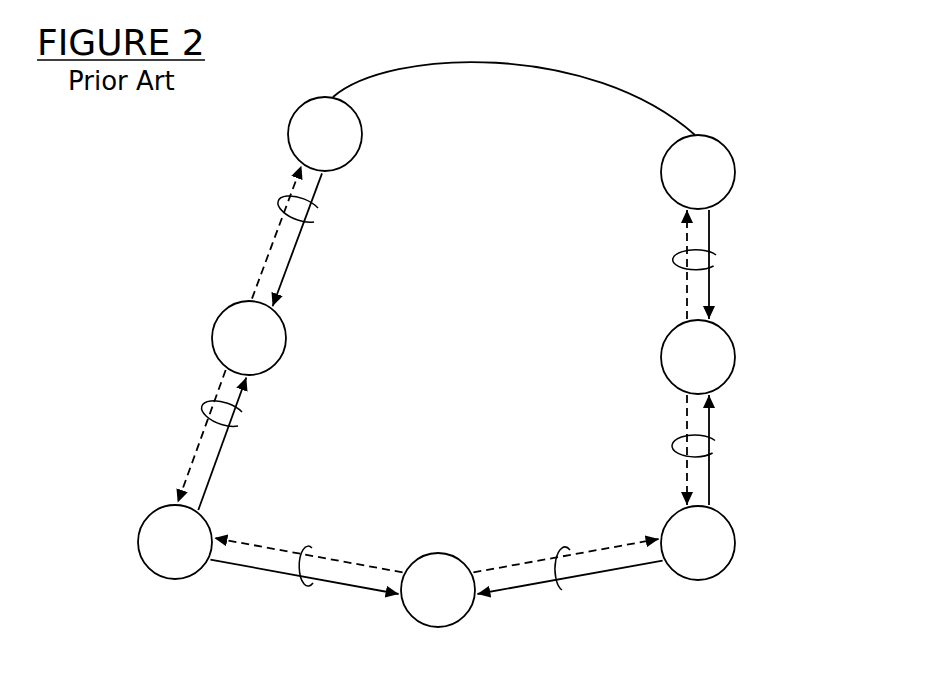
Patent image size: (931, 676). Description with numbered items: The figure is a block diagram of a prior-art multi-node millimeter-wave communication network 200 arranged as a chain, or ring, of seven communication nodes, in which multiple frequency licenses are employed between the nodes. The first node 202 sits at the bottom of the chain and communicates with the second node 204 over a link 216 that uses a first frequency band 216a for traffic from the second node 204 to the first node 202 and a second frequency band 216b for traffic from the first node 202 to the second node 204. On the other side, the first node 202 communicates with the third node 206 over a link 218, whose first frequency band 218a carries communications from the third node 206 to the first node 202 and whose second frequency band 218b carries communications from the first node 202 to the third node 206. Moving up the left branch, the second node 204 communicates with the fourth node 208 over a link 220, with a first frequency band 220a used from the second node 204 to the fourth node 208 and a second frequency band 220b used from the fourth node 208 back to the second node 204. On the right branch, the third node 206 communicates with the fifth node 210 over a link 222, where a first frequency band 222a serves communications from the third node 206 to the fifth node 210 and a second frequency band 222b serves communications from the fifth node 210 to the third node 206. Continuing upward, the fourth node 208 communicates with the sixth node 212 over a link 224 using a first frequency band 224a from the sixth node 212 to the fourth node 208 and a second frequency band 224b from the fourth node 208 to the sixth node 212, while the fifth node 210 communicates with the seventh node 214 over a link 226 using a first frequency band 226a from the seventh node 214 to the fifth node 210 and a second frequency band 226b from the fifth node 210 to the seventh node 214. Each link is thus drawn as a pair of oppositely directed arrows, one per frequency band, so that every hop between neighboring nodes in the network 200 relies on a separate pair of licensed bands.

The multi-node MMW communication network 200 is at (686, 89).
The first node 202 is at (458, 553).
The second node 204 is at (138, 541).
The third node 206 is at (736, 542).
The fourth node 208 is at (212, 337).
The fifth node 210 is at (736, 356).
The sixth node 212 is at (287, 133).
The seventh node 214 is at (736, 171).
The link 216 is at (313, 583).
The first frequency band 216a is at (252, 568).
The second frequency band 216b is at (282, 549).
The link 218 is at (562, 590).
The first frequency band 218a is at (606, 573).
The second frequency band 218b is at (602, 549).
The link 220 is at (238, 426).
The first frequency band 220a is at (216, 466).
The second frequency band 220b is at (190, 462).
The link 222 is at (713, 453).
The first frequency band 222a is at (712, 474).
The second frequency band 222b is at (684, 474).
The link 224 is at (314, 222).
The first frequency band 224a is at (293, 262).
The second frequency band 224b is at (263, 259).
The link 226 is at (714, 266).
The first frequency band 226a is at (712, 289).
The second frequency band 226b is at (684, 291).